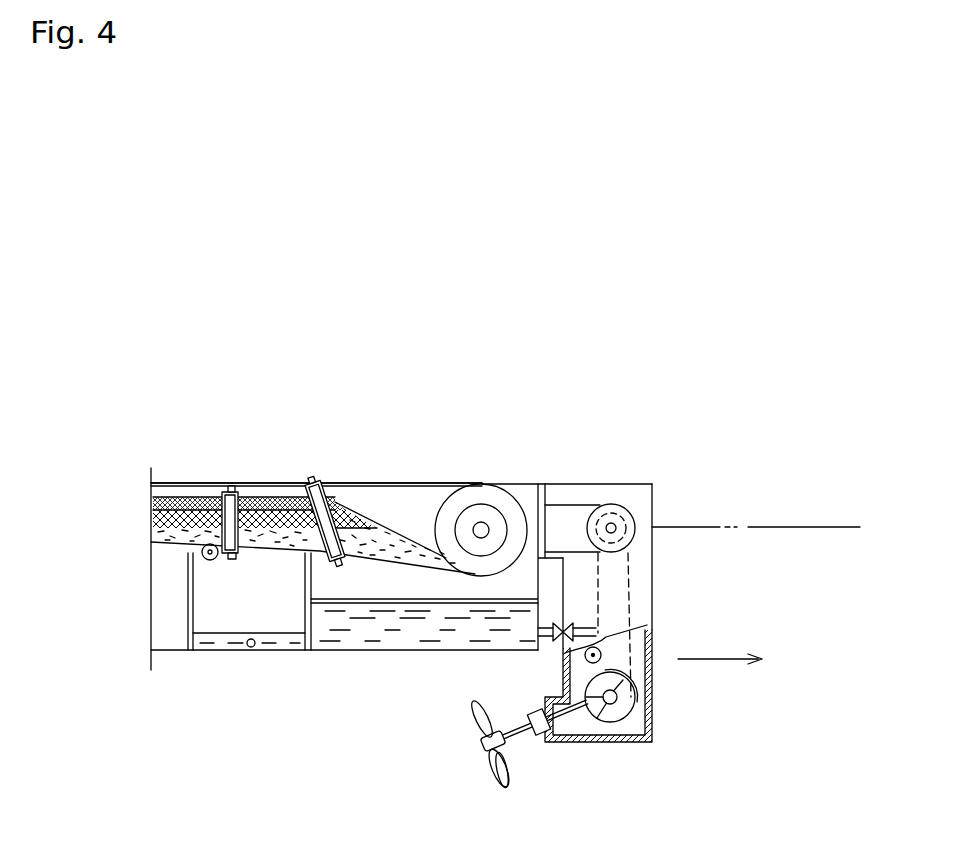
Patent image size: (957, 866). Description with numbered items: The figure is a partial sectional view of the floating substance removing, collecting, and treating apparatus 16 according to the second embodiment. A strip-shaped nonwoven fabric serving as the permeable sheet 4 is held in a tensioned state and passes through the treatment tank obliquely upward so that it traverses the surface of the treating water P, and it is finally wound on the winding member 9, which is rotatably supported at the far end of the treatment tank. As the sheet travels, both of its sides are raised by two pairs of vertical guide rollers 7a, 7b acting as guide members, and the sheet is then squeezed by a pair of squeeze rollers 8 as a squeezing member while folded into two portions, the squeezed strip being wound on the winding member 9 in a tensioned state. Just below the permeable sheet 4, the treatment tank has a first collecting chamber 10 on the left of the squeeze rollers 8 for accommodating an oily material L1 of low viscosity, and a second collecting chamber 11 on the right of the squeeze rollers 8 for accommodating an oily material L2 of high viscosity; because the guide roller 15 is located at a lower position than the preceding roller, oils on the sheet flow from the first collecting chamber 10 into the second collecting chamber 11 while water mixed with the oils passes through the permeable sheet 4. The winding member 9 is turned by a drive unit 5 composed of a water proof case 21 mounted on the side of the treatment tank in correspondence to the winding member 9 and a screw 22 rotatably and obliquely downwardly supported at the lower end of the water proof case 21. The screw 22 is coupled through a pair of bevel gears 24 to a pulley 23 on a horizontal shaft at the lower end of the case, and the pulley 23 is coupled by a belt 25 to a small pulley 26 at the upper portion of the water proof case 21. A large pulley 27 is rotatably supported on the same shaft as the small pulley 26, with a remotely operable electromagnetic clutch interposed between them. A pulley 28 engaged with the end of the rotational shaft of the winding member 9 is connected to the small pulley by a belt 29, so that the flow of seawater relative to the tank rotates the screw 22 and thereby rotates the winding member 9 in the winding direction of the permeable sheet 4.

The permeable sheet 4 is at (350, 486).
The drive unit 5 is at (562, 752).
The vertical guide roller 7a is at (206, 455).
The vertical guide roller 7b is at (221, 487).
The squeeze rollers 8 is at (318, 474).
The winding member 9 is at (486, 482).
The first collecting chamber 10 is at (243, 603).
The second collecting chamber 11 is at (358, 582).
The guide roller 15 is at (211, 561).
The floating substance removing, collecting, and treating apparatus 16 is at (483, 364).
The water proof case 21 is at (648, 610).
The screw 22 is at (503, 776).
The pulley 23 is at (627, 718).
The bevel gears 24 is at (621, 698).
The belt 25 is at (630, 597).
The small pulley 26 is at (621, 513).
The large pulley 27 is at (636, 518).
The pulley 28 is at (484, 505).
The belt 29 is at (578, 505).
The oily material having low viscosity L1 is at (280, 507).
The oily material having high viscosity L2 is at (400, 540).
The treating water P is at (756, 522).